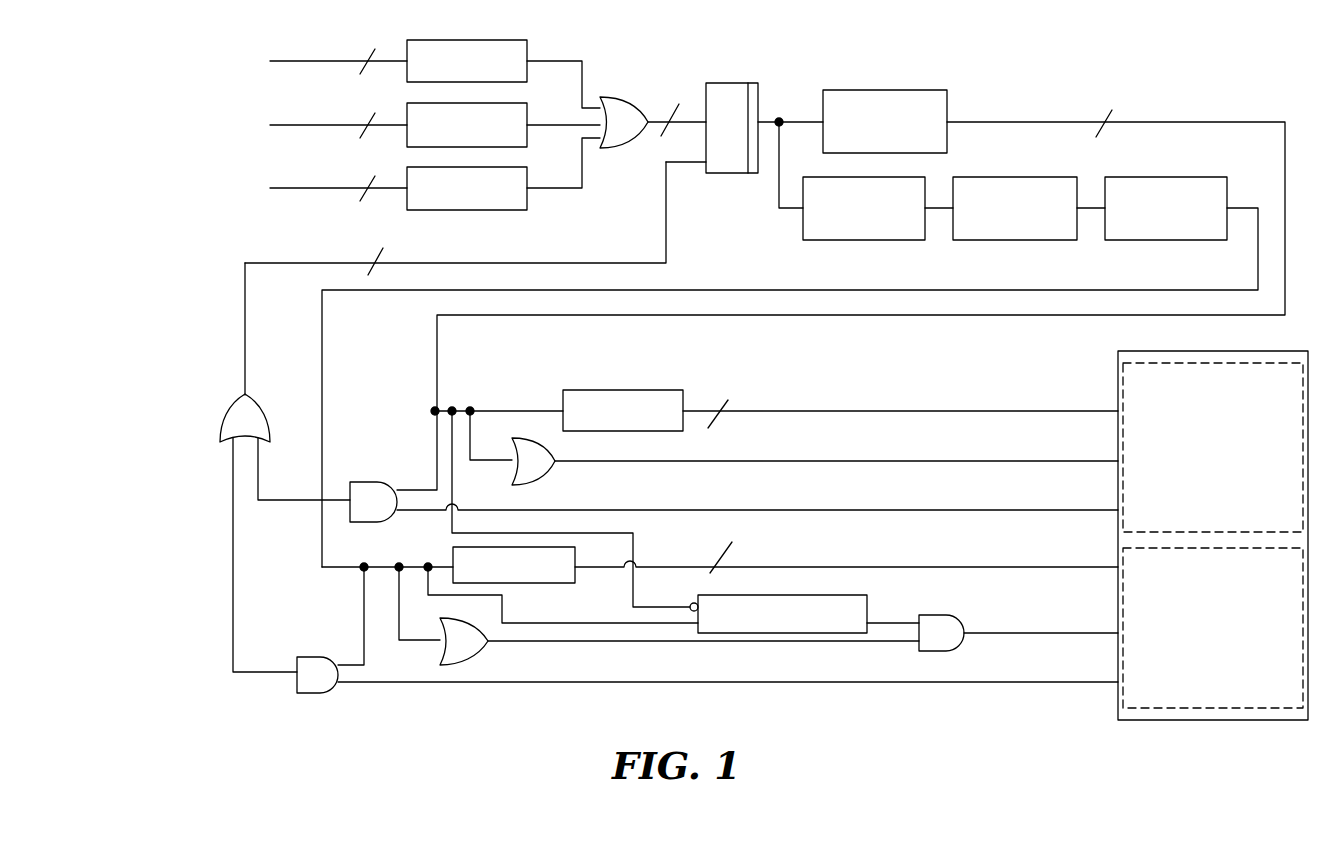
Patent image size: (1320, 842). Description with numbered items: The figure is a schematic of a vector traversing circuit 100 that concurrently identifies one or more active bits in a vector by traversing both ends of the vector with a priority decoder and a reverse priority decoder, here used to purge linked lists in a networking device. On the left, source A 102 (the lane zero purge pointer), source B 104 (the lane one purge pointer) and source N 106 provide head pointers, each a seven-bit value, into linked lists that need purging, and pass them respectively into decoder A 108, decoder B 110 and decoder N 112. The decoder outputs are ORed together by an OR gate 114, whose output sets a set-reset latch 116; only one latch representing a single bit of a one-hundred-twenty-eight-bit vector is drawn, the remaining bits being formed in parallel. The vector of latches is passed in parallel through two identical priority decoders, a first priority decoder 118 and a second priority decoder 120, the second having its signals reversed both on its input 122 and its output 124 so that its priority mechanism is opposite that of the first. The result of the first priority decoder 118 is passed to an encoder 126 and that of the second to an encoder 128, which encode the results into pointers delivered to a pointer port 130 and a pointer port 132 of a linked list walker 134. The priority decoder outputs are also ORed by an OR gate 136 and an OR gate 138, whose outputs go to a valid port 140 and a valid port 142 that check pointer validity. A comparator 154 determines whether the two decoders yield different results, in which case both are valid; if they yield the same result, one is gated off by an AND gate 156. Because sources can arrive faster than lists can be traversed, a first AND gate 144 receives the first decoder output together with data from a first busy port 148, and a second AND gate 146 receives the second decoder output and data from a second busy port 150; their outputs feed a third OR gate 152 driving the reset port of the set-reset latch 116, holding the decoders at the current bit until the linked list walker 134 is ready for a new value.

The vector traversing circuit 100 is at (777, 731).
The source A 102 is at (303, 59).
The source B 104 is at (303, 122).
The source N 106 is at (303, 186).
The decoder A 108 is at (512, 40).
The decoder B 110 is at (520, 102).
The decoder N 112 is at (525, 167).
The OR gate 114 is at (620, 97).
The set-reset latch 116 is at (728, 82).
The first priority decoder 118 is at (902, 90).
The second priority decoder 120 is at (1017, 242).
The reversed input 122 is at (867, 242).
The reversed output 124 is at (1168, 240).
The encoder 126 is at (665, 390).
The encoder 128 is at (566, 603).
The pointer port 130 is at (1118, 409).
The pointer port 132 is at (1118, 566).
The linked list walker 134 is at (1197, 372).
The OR gate 136 is at (553, 478).
The OR gate 138 is at (488, 655).
The valid port 140 is at (1118, 459).
The valid port 142 is at (1118, 631).
The first AND gate 144 is at (384, 480).
The second AND gate 146 is at (325, 695).
The first busy port 148 is at (1118, 510).
The second busy port 150 is at (1118, 681).
The third OR gate 152 is at (232, 403).
The comparator 154 is at (870, 608).
The AND gate 156 is at (955, 617).